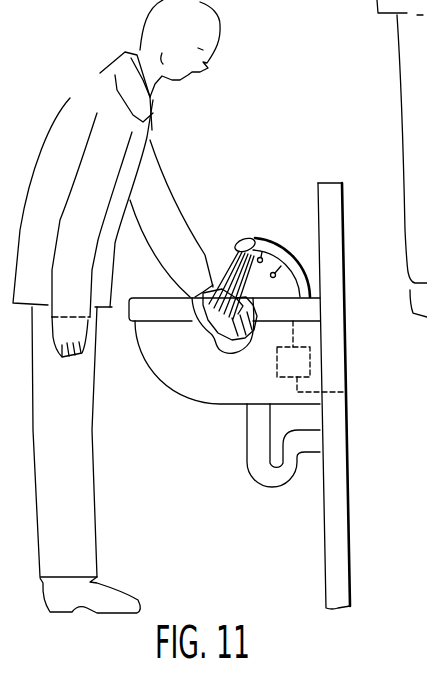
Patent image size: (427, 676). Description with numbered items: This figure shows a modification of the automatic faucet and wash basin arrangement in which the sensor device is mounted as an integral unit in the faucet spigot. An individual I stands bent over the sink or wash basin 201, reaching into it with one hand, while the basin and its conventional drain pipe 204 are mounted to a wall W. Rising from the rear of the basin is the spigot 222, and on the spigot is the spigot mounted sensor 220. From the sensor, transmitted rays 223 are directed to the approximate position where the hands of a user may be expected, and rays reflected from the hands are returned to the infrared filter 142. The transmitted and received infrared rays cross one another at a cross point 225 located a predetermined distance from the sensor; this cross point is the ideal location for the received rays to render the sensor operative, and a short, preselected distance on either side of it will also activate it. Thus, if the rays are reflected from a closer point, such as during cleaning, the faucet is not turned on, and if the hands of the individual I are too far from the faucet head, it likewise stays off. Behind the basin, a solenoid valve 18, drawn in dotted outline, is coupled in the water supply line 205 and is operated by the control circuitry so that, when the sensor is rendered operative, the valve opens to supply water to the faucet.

The individual I is at (70, 98).
The sink or wash basin 201 is at (207, 383).
The drain pipe 204 is at (272, 478).
The infrared filter 142 is at (227, 303).
The cross point 225 is at (212, 285).
The spigot 222 is at (243, 239).
The spigot mounted sensor 220 is at (280, 245).
The rays 223 is at (253, 237).
The solenoid valve 18 is at (311, 362).
The wall W is at (344, 380).
The water supply line 205 is at (350, 412).